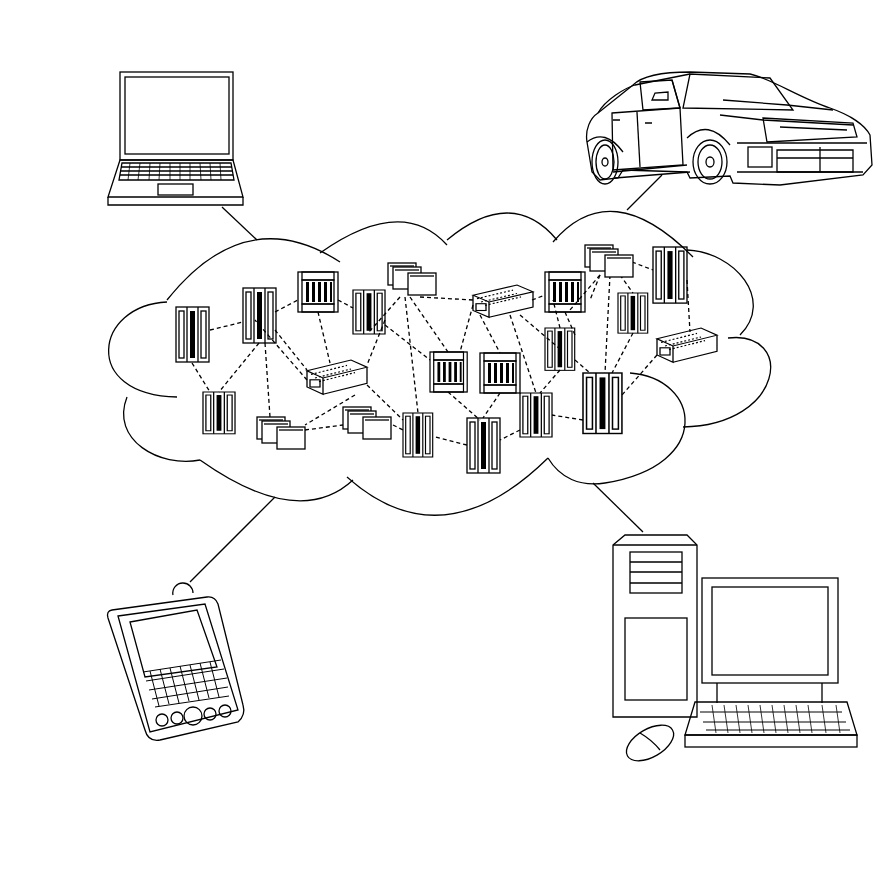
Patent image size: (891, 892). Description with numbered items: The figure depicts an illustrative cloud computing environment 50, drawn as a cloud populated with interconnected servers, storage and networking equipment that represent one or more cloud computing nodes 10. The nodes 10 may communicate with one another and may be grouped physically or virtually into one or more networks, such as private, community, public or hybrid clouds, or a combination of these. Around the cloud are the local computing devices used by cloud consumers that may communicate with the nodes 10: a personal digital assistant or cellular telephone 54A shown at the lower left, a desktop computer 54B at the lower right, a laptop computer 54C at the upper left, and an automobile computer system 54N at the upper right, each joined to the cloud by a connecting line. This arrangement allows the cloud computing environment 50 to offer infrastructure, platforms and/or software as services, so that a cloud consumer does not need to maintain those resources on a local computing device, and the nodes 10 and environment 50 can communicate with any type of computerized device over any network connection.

The cloud computing nodes 10 is at (722, 369).
The cloud computing environment 50 is at (770, 343).
The personal digital assistant or cellular telephone 54A is at (223, 655).
The desktop computer 54B is at (771, 578).
The laptop computer 54C is at (233, 121).
The automobile computer system 54N is at (587, 137).